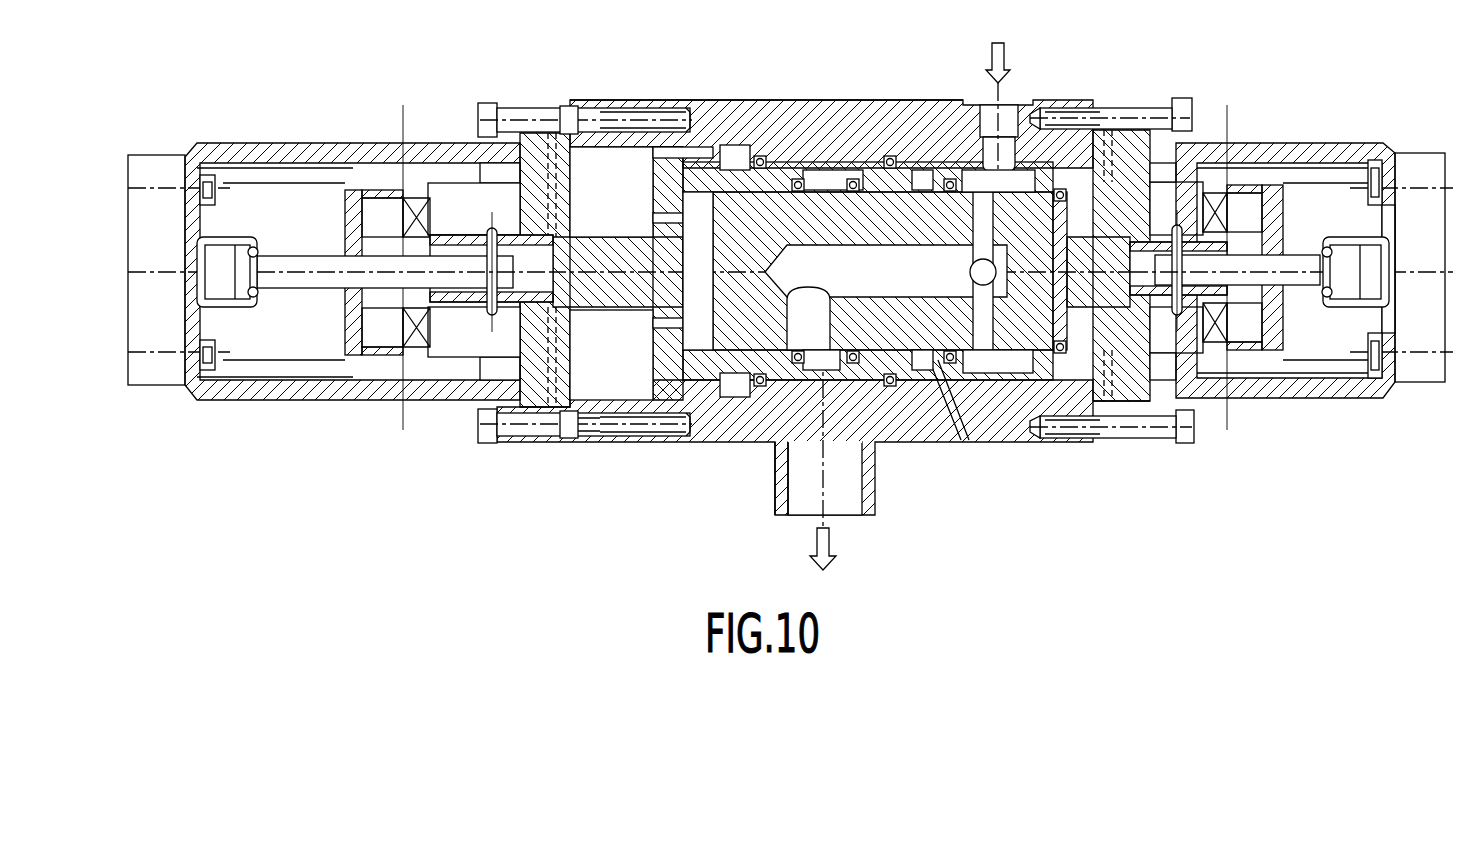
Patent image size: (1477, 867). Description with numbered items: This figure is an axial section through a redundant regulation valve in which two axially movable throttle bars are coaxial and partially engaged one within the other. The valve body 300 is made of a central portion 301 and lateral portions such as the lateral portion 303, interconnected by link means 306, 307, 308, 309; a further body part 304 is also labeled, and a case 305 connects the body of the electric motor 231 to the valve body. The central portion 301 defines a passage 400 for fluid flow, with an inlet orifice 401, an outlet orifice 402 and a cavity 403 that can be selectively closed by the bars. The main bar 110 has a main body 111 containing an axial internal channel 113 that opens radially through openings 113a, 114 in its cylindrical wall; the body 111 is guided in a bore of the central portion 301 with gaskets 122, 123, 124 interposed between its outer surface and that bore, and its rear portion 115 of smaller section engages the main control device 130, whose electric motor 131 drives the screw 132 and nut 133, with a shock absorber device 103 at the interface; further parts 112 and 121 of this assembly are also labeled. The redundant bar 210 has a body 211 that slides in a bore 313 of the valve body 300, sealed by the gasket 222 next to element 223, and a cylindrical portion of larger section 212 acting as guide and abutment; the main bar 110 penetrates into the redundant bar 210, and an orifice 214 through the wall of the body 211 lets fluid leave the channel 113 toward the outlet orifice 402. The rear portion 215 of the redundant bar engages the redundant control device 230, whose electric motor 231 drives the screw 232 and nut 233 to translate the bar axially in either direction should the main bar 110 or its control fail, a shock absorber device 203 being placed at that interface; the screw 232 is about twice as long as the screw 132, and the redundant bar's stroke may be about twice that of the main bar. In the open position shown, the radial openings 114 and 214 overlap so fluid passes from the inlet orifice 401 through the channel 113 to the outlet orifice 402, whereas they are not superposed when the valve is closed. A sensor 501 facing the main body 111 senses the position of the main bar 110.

The shock absorber device 103 is at (1243, 392).
The main bar 110 is at (695, 256).
The main body 111 is at (790, 164).
The right body block 112 is at (1078, 401).
The axial internal channel 113 is at (863, 247).
The radial opening 113a is at (960, 440).
The radial opening 114 is at (828, 322).
The rear portion 115 is at (1145, 442).
The end plate 121 is at (1062, 190).
The gasket 122 is at (946, 180).
The gasket 123 is at (875, 450).
The gasket 124 is at (760, 400).
The main control device 130 is at (1375, 443).
The electric motor 131 is at (1422, 160).
The screw 132 is at (1330, 232).
The nut 133 is at (1300, 340).
The shock absorber device 203 is at (428, 200).
The redundant bar 210 is at (540, 430).
The body of the redundant bar 211 is at (627, 397).
The cylindrical portion of larger section 212 is at (693, 397).
The orifice 214 is at (778, 492).
The rear portion 215 is at (615, 236).
The gasket 222 is at (760, 154).
The upper right seal 223 is at (875, 158).
The redundant control device 230 is at (377, 417).
The electric motor 231 is at (160, 372).
The screw 232 is at (296, 256).
The nut 233 is at (304, 330).
The valve body 300 is at (639, 84).
The central portion 301 is at (706, 116).
The lateral portion 303 is at (566, 110).
The right housing 304 is at (1290, 150).
The case 305 is at (228, 152).
The link element 306 is at (1183, 112).
The link means 307 is at (1189, 432).
The link means 308 is at (512, 112).
The link element 309 is at (480, 425).
The bore 313 is at (597, 430).
The passage 400 is at (1035, 83).
The inlet orifice 401 is at (990, 108).
The outlet orifice 402 is at (850, 500).
The cavity 403 is at (1013, 367).
The sensor 501 is at (900, 390).